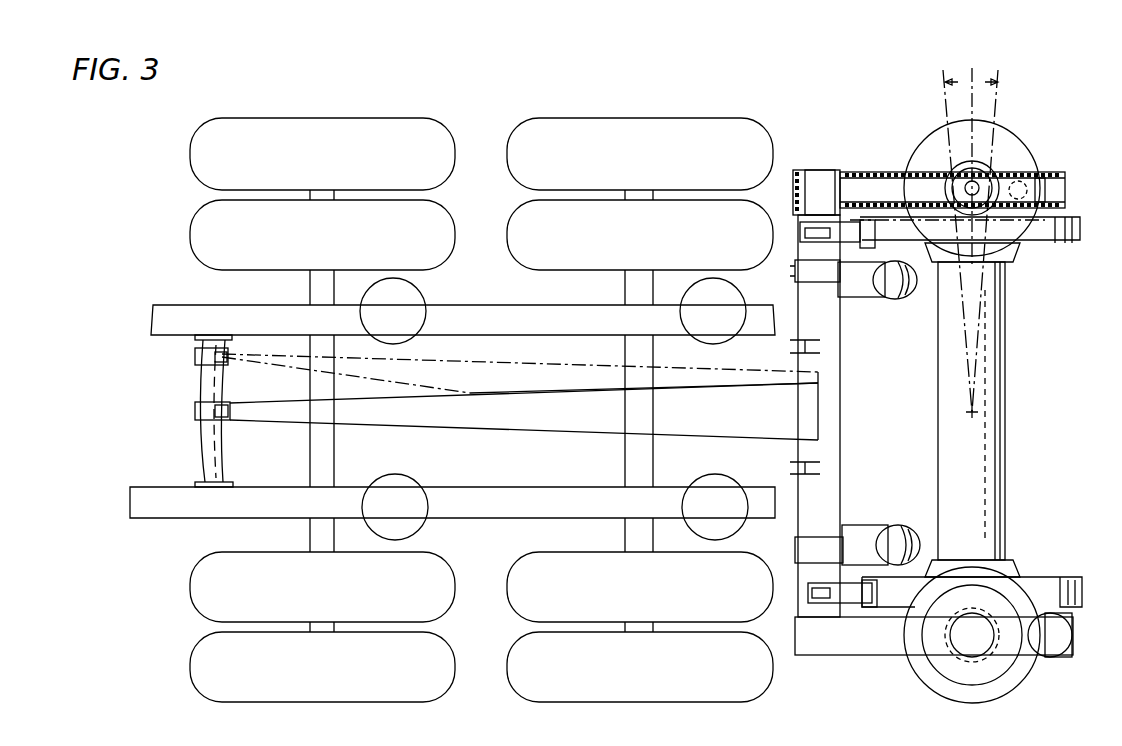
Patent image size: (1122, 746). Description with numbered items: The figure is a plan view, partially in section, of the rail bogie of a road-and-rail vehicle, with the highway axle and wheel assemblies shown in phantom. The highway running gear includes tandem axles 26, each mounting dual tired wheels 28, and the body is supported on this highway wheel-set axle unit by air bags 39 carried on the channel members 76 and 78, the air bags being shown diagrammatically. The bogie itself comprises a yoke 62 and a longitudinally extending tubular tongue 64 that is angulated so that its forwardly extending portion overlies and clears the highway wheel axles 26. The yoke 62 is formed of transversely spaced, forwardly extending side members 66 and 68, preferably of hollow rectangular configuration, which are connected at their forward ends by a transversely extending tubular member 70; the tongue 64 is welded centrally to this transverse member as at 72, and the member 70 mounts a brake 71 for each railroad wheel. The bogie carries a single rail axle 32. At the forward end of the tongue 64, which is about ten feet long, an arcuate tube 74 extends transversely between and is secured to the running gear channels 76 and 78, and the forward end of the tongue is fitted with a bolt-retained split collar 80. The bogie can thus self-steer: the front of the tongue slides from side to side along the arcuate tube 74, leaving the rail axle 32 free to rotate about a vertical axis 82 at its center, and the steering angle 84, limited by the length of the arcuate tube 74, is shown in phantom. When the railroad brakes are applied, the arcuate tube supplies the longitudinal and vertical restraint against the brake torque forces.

The dual tired wheels 28 is at (372, 122).
The tandem axles 26 is at (312, 278).
The air bags 39 is at (412, 293).
The channel member 76 is at (222, 320).
The channel member 78 is at (180, 513).
The arcuate tube 74 is at (218, 456).
The split collar 80 is at (200, 408).
The transversely extending tubular member 70 is at (838, 442).
The weld location 72 is at (820, 390).
The tubular tongue 64 is at (565, 392).
The steering angle 84 is at (476, 362).
The side member 66 is at (880, 172).
The brake 71 is at (868, 300).
The yoke 62 is at (1052, 374).
The rail axle 32 is at (1003, 314).
The vertical axis 82 is at (976, 412).
The side member 68 is at (875, 652).